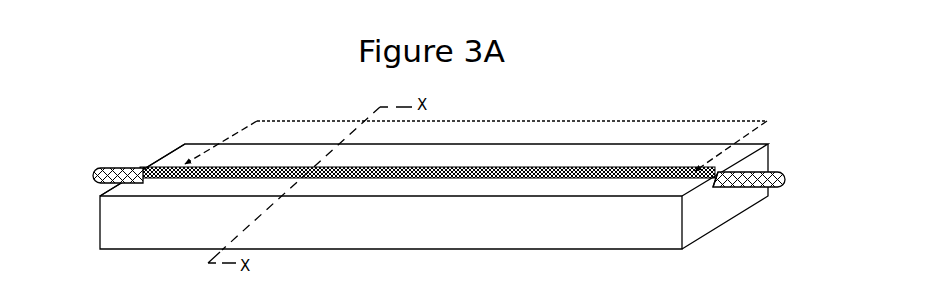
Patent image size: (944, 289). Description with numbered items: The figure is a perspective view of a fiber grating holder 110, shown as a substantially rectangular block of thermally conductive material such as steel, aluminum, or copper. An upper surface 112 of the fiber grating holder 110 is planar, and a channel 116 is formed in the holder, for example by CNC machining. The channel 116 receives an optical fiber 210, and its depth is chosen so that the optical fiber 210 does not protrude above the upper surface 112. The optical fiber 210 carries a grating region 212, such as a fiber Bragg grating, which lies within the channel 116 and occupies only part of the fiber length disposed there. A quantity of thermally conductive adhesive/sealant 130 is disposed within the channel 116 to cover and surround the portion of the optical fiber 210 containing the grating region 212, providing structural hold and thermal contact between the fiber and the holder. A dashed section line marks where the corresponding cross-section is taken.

The fiber grating holder 110 is at (146, 243).
The upper surface 112 is at (175, 154).
The channel 116 is at (717, 182).
The thermally conductive adhesive/sealant 130 is at (410, 177).
The optical fiber 210 is at (776, 175).
The grating region 212 is at (510, 121).